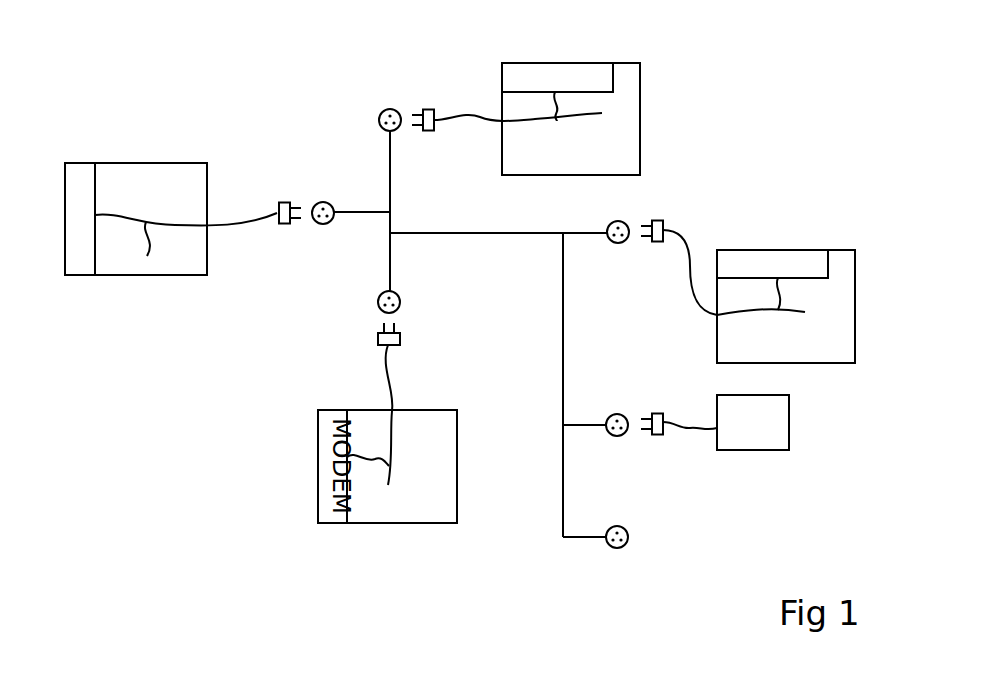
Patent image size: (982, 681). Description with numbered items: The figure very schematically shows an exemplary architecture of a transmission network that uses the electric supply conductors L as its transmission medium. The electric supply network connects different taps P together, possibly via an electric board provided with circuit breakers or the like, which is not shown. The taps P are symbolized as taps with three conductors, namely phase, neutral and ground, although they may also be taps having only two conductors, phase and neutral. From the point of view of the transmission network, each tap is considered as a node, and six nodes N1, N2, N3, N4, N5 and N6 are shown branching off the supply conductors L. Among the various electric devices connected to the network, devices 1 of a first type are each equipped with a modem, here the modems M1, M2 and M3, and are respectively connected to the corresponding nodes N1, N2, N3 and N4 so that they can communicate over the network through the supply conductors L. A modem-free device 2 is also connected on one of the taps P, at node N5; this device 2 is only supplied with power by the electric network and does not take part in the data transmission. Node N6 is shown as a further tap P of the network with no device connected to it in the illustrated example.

The device of a first type 1 is at (187, 275).
The modem-free device 2 is at (772, 443).
The electric supply conductors L is at (357, 210).
The taps P is at (383, 111).
The node N1 is at (279, 228).
The node N2 is at (431, 105).
The node N3 is at (653, 245).
The node N4 is at (407, 318).
The node N5 is at (631, 440).
The node N6 is at (651, 538).
The modem M1 is at (80, 164).
The modem M2 is at (600, 68).
The modem M3 is at (812, 257).